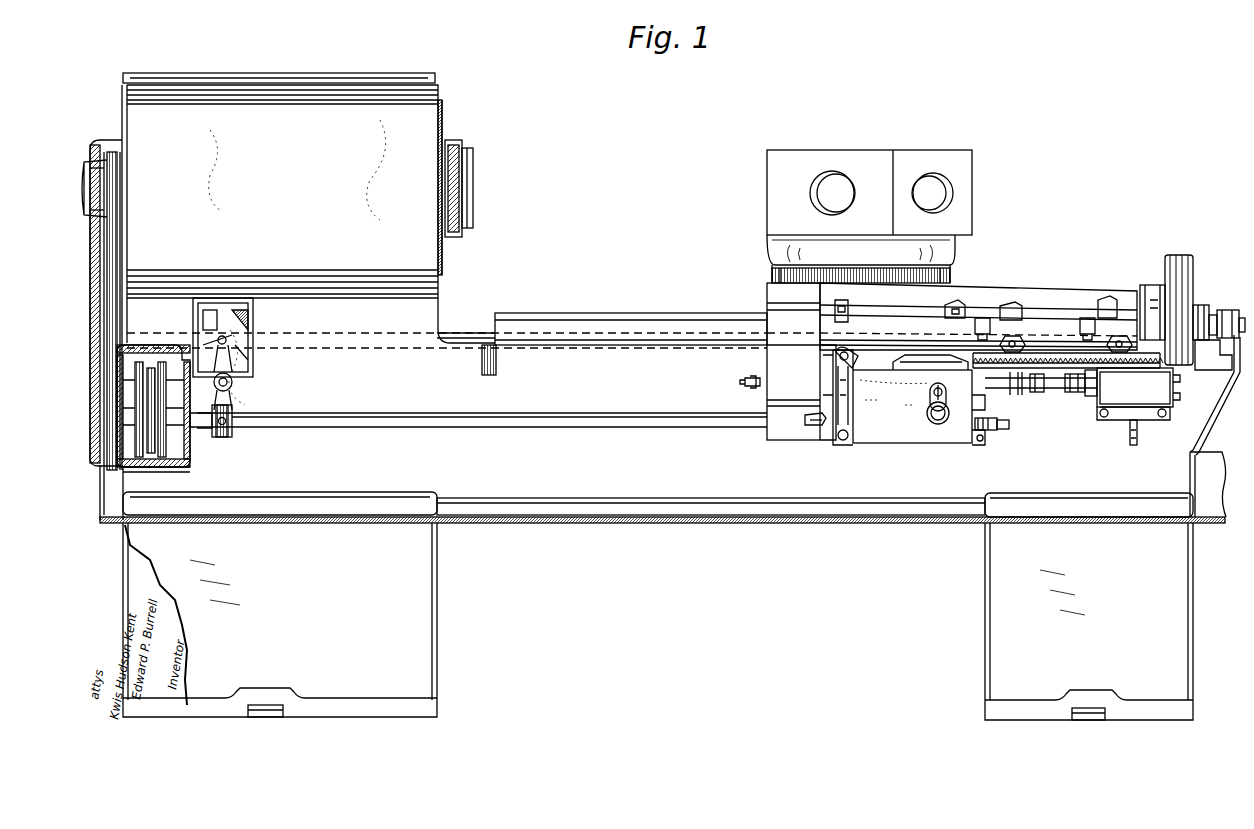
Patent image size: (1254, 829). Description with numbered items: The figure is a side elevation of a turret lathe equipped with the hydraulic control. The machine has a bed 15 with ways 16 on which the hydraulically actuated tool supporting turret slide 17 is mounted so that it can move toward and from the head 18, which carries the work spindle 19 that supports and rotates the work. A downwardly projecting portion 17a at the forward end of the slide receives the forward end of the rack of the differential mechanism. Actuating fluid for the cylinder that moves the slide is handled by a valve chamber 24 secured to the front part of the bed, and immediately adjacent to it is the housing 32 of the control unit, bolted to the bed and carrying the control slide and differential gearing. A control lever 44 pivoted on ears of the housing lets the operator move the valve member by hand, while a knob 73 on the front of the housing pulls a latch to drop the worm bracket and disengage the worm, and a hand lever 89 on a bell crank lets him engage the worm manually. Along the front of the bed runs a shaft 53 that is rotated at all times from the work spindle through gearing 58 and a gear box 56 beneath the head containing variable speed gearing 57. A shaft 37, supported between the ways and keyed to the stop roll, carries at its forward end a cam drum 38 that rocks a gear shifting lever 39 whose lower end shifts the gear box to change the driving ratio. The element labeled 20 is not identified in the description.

The bed 15 is at (698, 488).
The ways 16 is at (565, 318).
The turret slide 17 is at (1016, 293).
The downwardly projecting portion 17a is at (788, 361).
The head 18 is at (322, 88).
The work spindle 19 is at (470, 150).
The tool post 20 is at (767, 180).
The valve chamber 24 is at (1160, 390).
The housing 32 is at (905, 440).
The shaft 37 is at (372, 345).
The cam drum 38 is at (258, 328).
The gear shifting lever 39 is at (232, 398).
The control lever 44 is at (1000, 428).
The shaft 53 is at (591, 423).
The gear box 56 is at (145, 346).
The variable speed gearing 57 is at (152, 465).
The gearing 58 is at (112, 285).
The knob 73 is at (928, 420).
The hand lever 89 is at (812, 419).